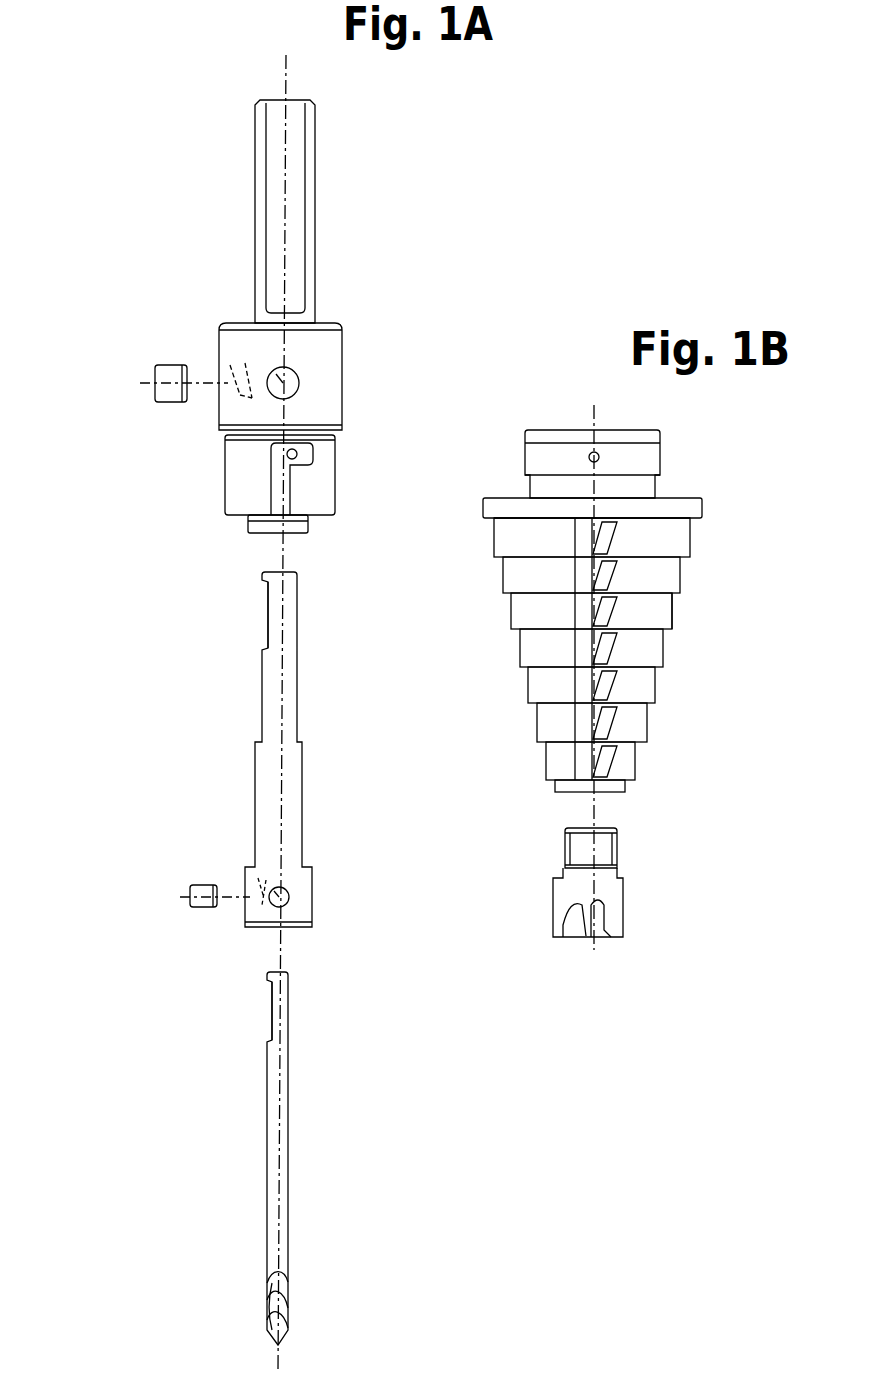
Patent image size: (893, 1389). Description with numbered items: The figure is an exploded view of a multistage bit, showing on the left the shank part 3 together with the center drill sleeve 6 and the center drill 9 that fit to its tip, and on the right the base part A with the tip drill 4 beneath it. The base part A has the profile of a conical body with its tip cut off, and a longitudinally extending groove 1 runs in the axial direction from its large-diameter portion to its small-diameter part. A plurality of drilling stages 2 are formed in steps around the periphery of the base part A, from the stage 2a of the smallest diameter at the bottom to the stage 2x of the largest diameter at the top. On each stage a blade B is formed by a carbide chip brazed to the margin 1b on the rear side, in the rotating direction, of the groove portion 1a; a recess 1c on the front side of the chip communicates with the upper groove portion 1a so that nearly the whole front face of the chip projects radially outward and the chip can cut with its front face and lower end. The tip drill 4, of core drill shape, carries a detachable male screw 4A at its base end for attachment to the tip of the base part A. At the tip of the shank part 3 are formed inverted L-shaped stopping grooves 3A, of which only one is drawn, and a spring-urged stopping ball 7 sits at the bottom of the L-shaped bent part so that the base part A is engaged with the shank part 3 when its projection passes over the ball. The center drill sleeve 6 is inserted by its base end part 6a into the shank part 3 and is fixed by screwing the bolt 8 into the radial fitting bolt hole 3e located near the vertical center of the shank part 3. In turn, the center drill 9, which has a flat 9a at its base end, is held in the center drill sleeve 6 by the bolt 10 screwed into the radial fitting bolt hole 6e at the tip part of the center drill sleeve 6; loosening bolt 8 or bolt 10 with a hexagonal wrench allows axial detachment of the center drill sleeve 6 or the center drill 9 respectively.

In FIG. 1B, the longitudinally extending groove 1 is at (580, 688).
In FIG. 1B, the groove portion 1a is at (587, 567).
In FIG. 1B, the margin 1b is at (598, 602).
In FIG. 1B, the recess 1c is at (596, 640).
In FIG. 1B, the drilling stage 2 is at (657, 687).
In FIG. 1B, the stage of the largest diameter 2x is at (670, 537).
In FIG. 1B, the stage of the smallest diameter 2a is at (625, 762).
In FIG. 1B, the base part A is at (680, 612).
In FIG. 1B, the blade B is at (600, 718).
In FIG. 1A, the shank part 3 is at (308, 205).
In FIG. 1A, the fitting bolt hole 3e is at (297, 373).
In FIG. 1A, the stopping groove 3A is at (277, 480).
In FIG. 1A, the stopping ball 7 is at (297, 454).
In FIG. 1A, the bolt 8 is at (155, 388).
In FIG. 1A, the center drill sleeve 6 is at (255, 772).
In FIG. 1A, the recess of the center drill sleeve 6a is at (268, 622).
In FIG. 1A, the fitting bolt hole 6e is at (289, 902).
In FIG. 1A, the bolt 10 is at (190, 898).
In FIG. 1A, the center drill 9 is at (290, 1169).
In FIG. 1A, the flat of the center drill 9a is at (272, 1022).
In FIG. 1B, the male screw 4A is at (603, 852).
In FIG. 1B, the tip drill 4 is at (615, 906).